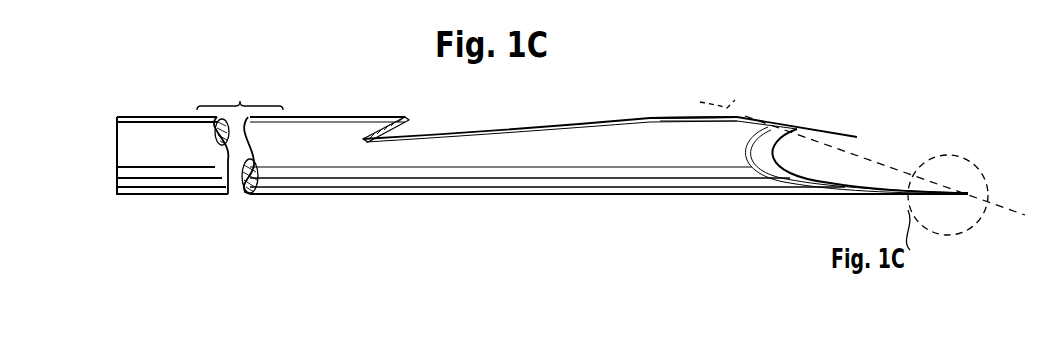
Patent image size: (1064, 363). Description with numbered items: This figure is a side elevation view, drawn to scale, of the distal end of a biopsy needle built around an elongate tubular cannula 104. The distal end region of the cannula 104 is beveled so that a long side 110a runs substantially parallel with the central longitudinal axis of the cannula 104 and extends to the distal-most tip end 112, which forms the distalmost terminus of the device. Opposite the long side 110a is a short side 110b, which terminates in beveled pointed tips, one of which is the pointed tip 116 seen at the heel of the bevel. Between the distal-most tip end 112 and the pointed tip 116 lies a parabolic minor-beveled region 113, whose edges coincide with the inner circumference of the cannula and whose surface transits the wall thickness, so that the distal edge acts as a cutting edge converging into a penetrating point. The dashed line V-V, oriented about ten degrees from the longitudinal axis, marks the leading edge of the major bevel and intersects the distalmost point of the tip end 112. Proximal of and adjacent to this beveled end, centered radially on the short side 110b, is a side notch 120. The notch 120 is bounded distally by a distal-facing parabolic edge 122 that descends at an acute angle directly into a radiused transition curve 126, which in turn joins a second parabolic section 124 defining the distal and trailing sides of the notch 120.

The cannula 104 is at (302, 200).
The long side 110a is at (841, 208).
The short side 110b is at (688, 108).
The distal-most tip end 112 is at (972, 204).
The parabolic minor-beveled regions 113 is at (765, 158).
The pointed tip 116 is at (857, 137).
The side notch 120 is at (494, 128).
The first parabolic section 122 is at (404, 116).
The second parabolic section 124 is at (658, 116).
The radiused transitions 126 is at (362, 139).
The line V- V is at (862, 142).